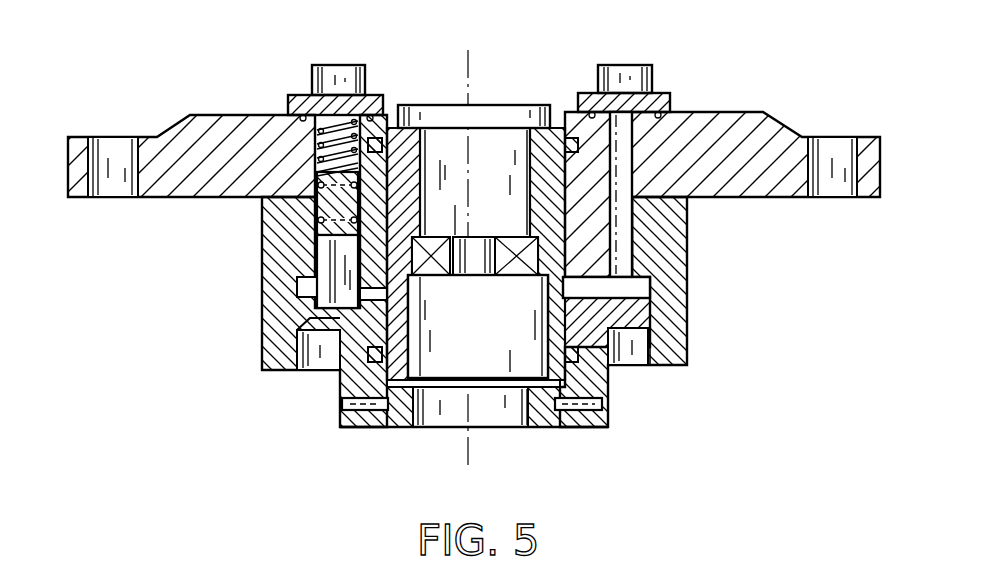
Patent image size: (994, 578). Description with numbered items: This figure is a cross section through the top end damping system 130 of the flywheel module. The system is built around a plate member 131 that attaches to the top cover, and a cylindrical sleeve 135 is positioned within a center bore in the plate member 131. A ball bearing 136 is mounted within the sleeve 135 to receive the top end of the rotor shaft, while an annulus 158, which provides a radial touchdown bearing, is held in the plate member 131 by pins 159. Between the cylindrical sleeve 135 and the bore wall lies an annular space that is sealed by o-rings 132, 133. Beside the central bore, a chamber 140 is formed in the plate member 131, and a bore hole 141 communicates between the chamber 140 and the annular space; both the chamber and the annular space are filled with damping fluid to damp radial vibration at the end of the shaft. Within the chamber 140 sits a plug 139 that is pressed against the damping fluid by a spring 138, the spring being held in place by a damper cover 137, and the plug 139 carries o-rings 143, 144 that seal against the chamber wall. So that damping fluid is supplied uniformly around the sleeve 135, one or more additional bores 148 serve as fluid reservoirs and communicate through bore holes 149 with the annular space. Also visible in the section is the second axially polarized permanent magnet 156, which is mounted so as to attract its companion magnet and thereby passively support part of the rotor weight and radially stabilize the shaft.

The damping system 130 is at (230, 316).
The plate member 131 is at (740, 122).
The o-ring 132 is at (570, 133).
The o-ring 133 is at (567, 353).
The cylindrical sleeve 135 is at (540, 152).
The ball bearing 136 is at (478, 326).
The damper cover 137 is at (300, 93).
The spring 138 is at (315, 116).
The plug 139 is at (362, 210).
The chamber 140 is at (328, 258).
The bore hole 141 is at (377, 292).
The o-ring 143 is at (320, 222).
The o-ring 144 is at (323, 197).
The additional bore 148 is at (625, 218).
The bore hole 149 is at (637, 297).
The permanent magnet 156 is at (670, 311).
The annulus 158 is at (397, 428).
The pin 159 is at (345, 402).